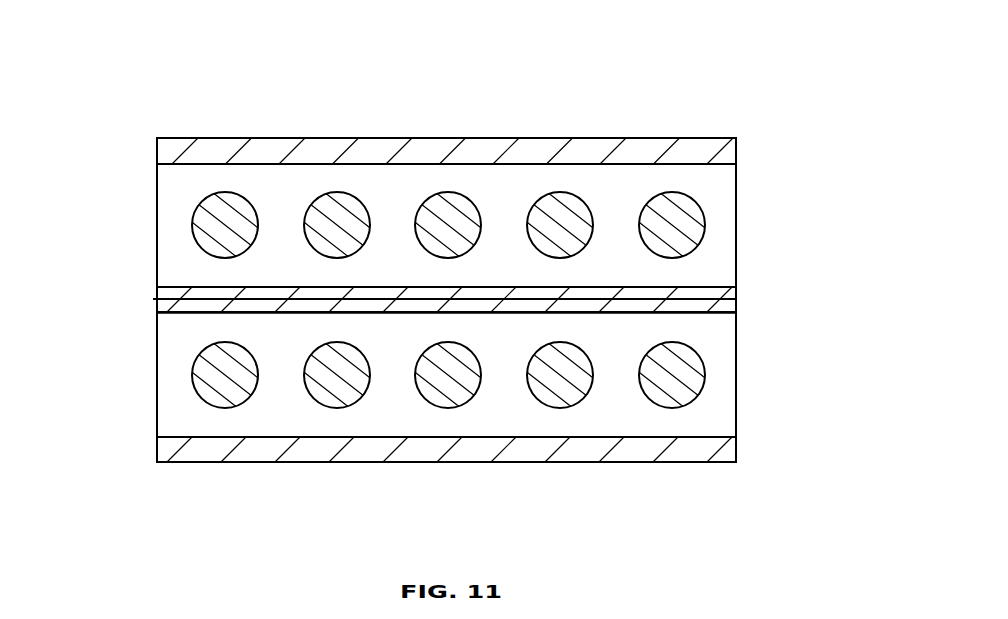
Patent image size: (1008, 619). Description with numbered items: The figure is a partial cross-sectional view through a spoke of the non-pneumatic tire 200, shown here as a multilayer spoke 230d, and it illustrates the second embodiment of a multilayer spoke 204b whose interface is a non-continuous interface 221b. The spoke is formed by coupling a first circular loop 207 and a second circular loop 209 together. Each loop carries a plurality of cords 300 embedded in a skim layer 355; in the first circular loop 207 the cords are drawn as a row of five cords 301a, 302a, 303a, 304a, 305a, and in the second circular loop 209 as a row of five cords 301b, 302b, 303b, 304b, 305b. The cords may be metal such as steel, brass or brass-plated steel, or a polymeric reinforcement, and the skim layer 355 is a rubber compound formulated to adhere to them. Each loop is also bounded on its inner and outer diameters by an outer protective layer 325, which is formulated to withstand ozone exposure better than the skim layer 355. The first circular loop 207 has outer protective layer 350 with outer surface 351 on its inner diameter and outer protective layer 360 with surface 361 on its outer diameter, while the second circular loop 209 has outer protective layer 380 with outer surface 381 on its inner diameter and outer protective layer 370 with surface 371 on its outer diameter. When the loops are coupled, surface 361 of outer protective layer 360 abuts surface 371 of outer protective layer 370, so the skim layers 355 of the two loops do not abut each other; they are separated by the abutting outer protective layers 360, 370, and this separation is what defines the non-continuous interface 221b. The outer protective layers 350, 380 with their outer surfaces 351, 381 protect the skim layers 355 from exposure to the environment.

The non-pneumatic tire 200 is at (102, 69).
The multilayer spoke 230d is at (98, 114).
The outer protective layer 325 is at (351, 88).
The plurality of cords 300 is at (167, 376).
The outer protective layer 350 is at (210, 147).
The outer surface 351 is at (228, 126).
The skim layer 355 is at (183, 333).
The outer protective layer 370 is at (385, 293).
The surface 371 is at (522, 283).
The outer protective layer 360 is at (418, 303).
The surface 361 is at (446, 340).
The outer protective layer 380 is at (195, 450).
The outer surface 381 is at (209, 476).
The cord 301a is at (225, 213).
The cord 302a is at (337, 213).
The cord 303a is at (448, 213).
The cord 304a is at (555, 212).
The cord 305a is at (660, 212).
The cord 301b is at (222, 380).
The cord 302b is at (333, 382).
The cord 303b is at (440, 376).
The cord 304b is at (550, 373).
The cord 305b is at (663, 376).
The first circular loop 207 is at (722, 248).
The second circular loop 209 is at (710, 345).
The non-continuous interface 221b is at (758, 298).
The multilayer spoke 204b is at (813, 310).